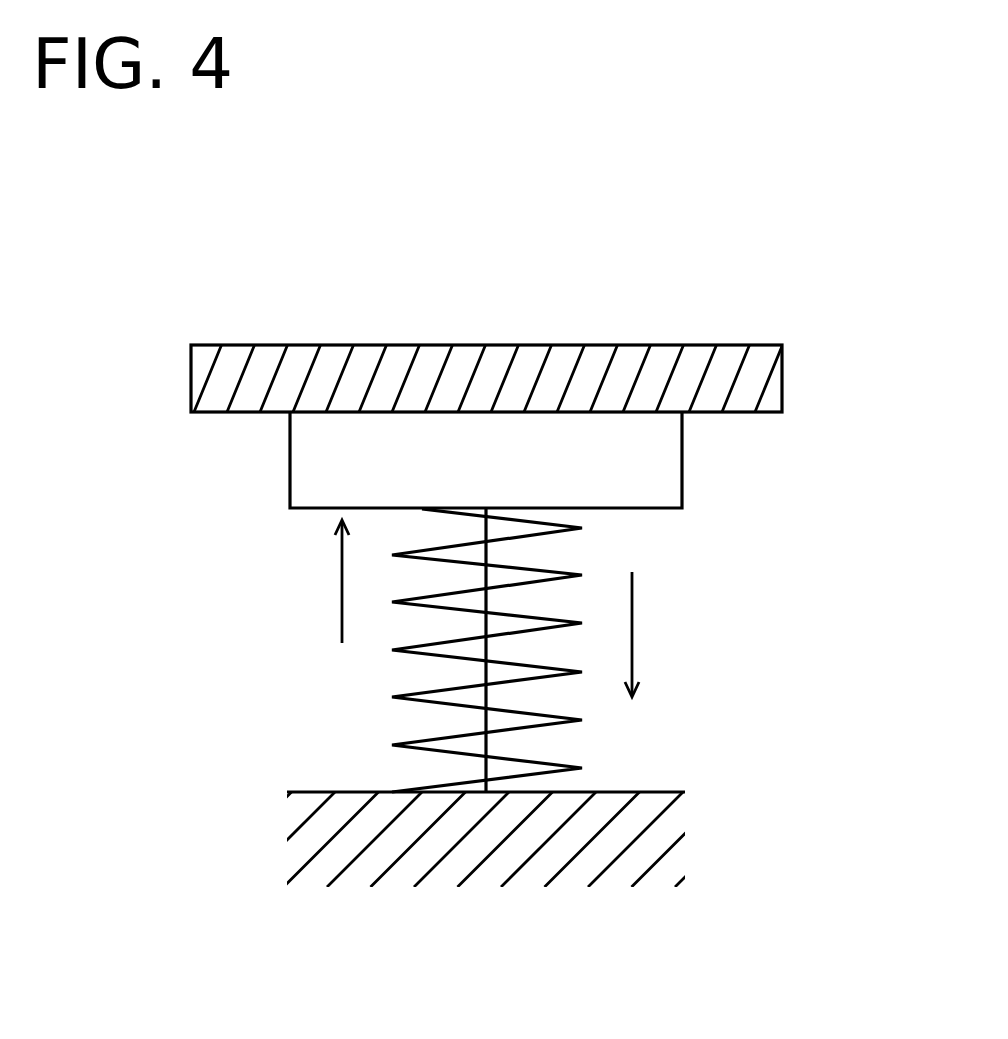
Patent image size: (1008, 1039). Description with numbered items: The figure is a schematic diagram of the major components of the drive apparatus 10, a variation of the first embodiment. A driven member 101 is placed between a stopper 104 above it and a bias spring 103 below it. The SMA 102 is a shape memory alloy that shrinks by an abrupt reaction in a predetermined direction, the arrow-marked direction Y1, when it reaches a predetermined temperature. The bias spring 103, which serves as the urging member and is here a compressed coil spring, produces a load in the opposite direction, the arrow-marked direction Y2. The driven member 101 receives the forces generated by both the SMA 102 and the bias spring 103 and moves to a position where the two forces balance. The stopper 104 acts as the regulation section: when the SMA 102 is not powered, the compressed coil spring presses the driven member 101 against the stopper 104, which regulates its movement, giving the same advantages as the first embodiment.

The drive apparatus 10 is at (461, 276).
The driven member 101 is at (683, 472).
The SMA 102 is at (486, 749).
The bias spring 103 is at (390, 697).
The stopper 104 is at (784, 372).
The shrinkage direction of the SMA Y1 is at (662, 634).
The load direction of the bias spring Y2 is at (307, 581).